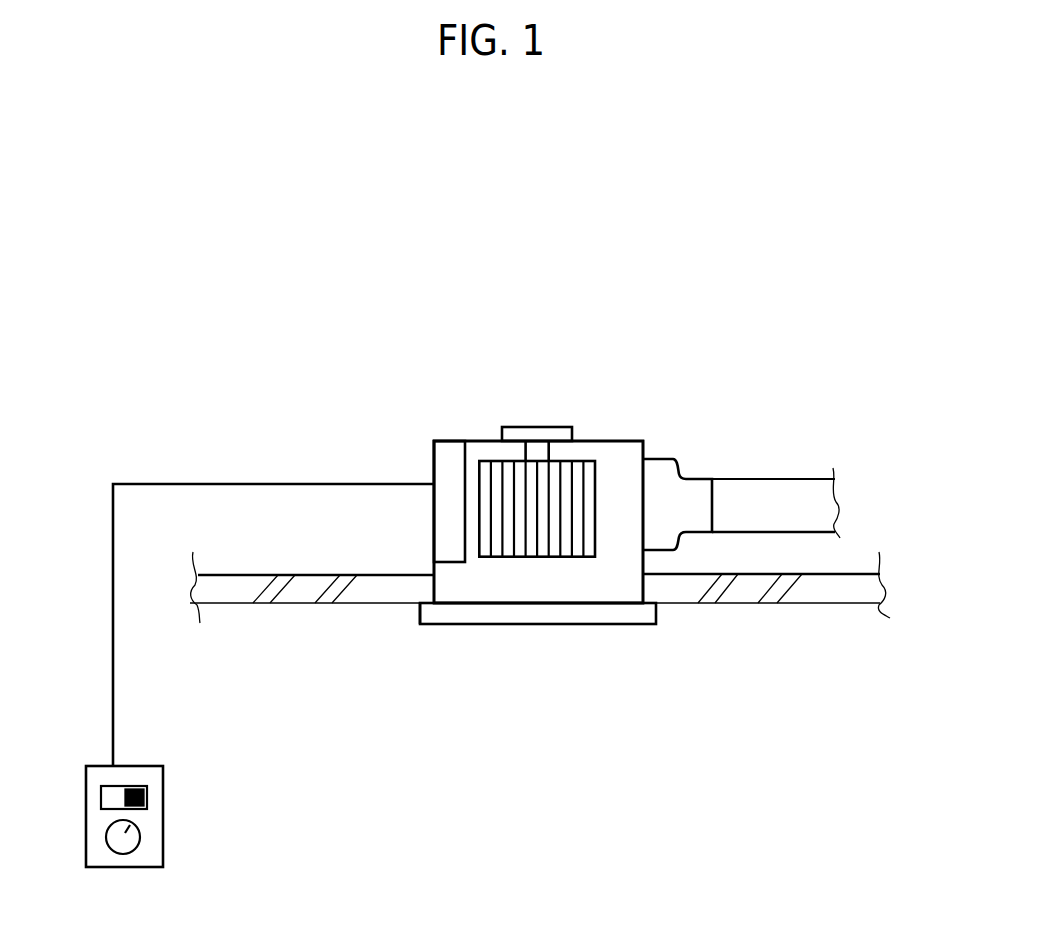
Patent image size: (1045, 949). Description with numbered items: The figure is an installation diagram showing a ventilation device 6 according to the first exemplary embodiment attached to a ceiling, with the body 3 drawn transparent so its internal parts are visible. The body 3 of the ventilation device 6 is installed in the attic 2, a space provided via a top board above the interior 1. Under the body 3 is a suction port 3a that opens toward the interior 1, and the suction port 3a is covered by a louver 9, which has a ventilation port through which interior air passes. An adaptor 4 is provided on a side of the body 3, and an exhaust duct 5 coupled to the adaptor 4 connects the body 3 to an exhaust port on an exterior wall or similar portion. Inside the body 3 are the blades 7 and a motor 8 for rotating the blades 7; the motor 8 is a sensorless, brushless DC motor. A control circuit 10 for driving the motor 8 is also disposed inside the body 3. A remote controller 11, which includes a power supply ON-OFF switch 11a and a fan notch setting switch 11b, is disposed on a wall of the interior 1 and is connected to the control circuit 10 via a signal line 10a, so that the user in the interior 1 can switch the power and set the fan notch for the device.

The interior 1 is at (540, 674).
The attic 2 is at (502, 232).
The body 3 is at (643, 437).
The suction port 3a is at (563, 603).
The adaptor 4 is at (666, 495).
The exhaust duct 5 is at (755, 500).
The ventilation device 6 is at (363, 385).
The blades 7 is at (587, 460).
The motor 8 is at (517, 427).
The louver 9 is at (420, 625).
The control circuit 10 is at (448, 452).
The signal line 10a is at (154, 483).
The remote controller 11 is at (145, 773).
The power supply ON-OFF switch 11a is at (147, 798).
The fan notch setting switch 11b is at (142, 837).